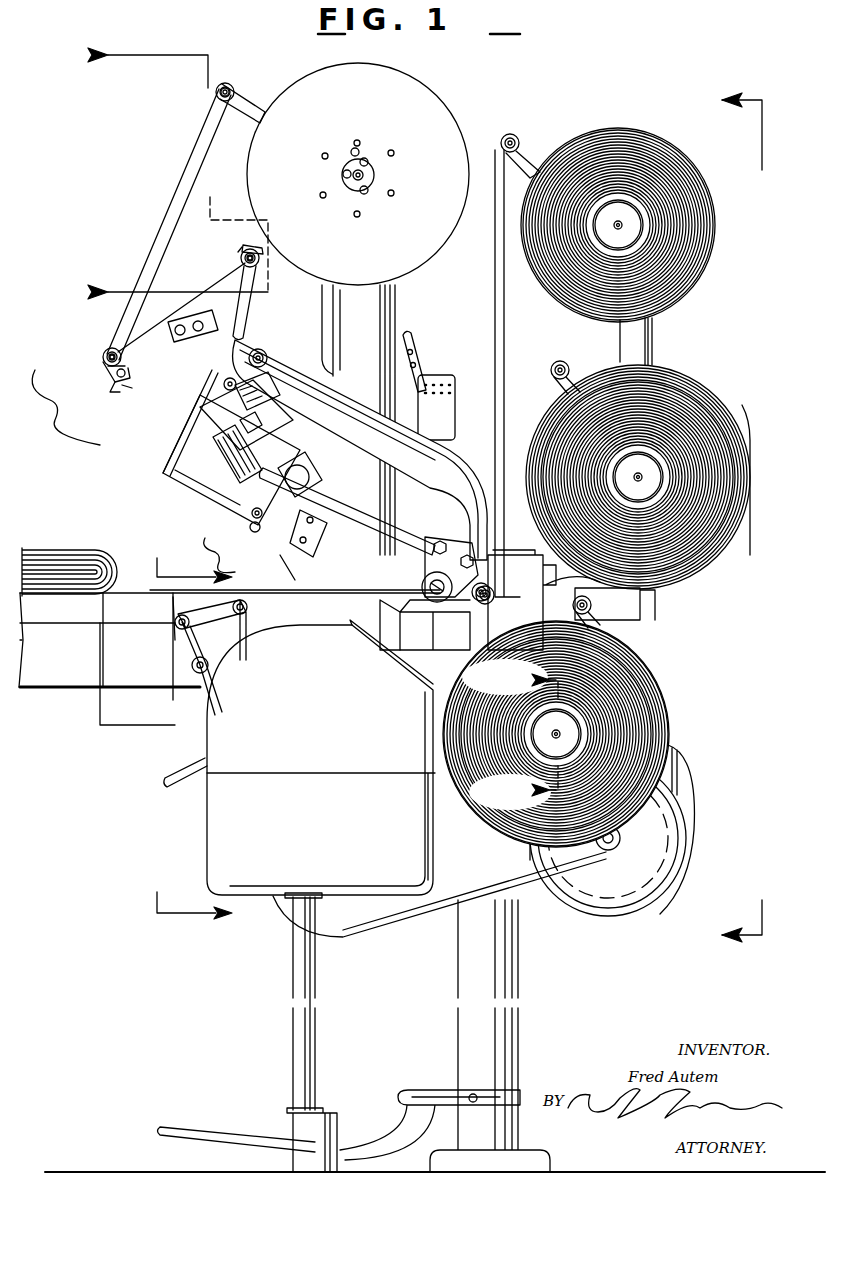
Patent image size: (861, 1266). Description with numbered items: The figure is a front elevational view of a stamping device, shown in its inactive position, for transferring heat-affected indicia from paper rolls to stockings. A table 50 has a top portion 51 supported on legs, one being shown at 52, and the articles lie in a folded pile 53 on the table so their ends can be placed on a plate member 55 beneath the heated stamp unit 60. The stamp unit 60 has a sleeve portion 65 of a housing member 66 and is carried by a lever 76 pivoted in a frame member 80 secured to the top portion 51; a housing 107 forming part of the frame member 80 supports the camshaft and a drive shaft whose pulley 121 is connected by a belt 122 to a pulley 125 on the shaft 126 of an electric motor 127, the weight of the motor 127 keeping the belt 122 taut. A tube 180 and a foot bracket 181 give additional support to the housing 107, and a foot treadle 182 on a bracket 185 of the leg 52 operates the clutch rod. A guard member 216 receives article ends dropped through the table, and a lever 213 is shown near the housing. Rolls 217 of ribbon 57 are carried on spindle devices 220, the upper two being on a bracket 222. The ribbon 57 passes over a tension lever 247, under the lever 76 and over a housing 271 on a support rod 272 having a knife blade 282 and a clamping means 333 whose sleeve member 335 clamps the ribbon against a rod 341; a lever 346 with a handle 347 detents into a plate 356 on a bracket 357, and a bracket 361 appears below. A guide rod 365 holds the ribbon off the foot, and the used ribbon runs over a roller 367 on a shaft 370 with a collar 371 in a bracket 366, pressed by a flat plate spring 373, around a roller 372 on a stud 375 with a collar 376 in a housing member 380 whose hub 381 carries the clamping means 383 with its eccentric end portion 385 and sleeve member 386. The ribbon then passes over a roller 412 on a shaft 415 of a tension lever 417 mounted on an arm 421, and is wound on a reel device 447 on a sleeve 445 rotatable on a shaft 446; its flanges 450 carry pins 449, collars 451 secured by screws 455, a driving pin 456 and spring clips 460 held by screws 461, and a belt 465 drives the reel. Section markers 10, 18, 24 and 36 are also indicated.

The section line 10 is at (208, 742).
The section line 18 is at (721, 521).
The section line 24 is at (516, 739).
The section line 36 is at (156, 176).
The table 50 is at (80, 690).
The top portion 51 is at (52, 677).
The leg 52 is at (519, 983).
The pile 53 is at (88, 558).
The plate member 55 is at (157, 590).
The paper strip or ribbon 57 is at (496, 305).
The heated stamp unit 60 is at (192, 486).
The sleeve portion 65 is at (242, 437).
The housing member 66 is at (235, 395).
The lever 76 is at (464, 448).
The frame member 80 is at (503, 560).
The housing 107 is at (207, 858).
The pulley 121 is at (362, 923).
The belt 122 is at (528, 893).
The pulley 125 is at (620, 847).
The shaft 126 is at (622, 840).
The electric motor 127 is at (678, 832).
The tube 180 is at (316, 1047).
The foot bracket 181 is at (335, 1120).
The foot treadle 182 is at (212, 1128).
The bracket 185 is at (440, 1090).
The lever 213 is at (167, 783).
The guard member 216 is at (113, 728).
The rolls 217 is at (712, 226).
The spindle devices 220 is at (624, 224).
The bracket 222 is at (656, 346).
The tension lever 247 is at (534, 166).
The housing 271 is at (314, 476).
The support rod 272 is at (357, 508).
The knife blade 282 is at (318, 538).
The clamping means 333 is at (208, 555).
The sleeve member 335 is at (260, 540).
The rod 341 is at (255, 531).
The lever 346 is at (468, 636).
The handle 347 is at (414, 355).
The plate 356 is at (448, 416).
The bracket 357 is at (248, 357).
The bracket 361 is at (420, 670).
The guide rod 365 is at (223, 382).
The bracket 366 is at (262, 318).
The roller 367 is at (263, 252).
The shaft 370 is at (261, 258).
The collar 371 is at (243, 258).
The roller 372 is at (116, 350).
The flat plate spring 373 is at (247, 248).
The stud 375 is at (117, 371).
The collar 376 is at (106, 357).
The housing member 380 is at (108, 366).
The sleeve or hub 381 is at (117, 381).
The clamping means 383 is at (62, 407).
The eccentric end portion 385 is at (126, 386).
The sleeve member 386 is at (118, 393).
The roller 412 is at (224, 102).
The rod or shaft 415 is at (238, 112).
The tension lever 417 is at (249, 116).
The arm 421 is at (384, 309).
The sleeve 445 is at (350, 170).
The shaft 446 is at (372, 162).
The reel device 447 is at (463, 128).
The pins 449 is at (393, 191).
The flanges 450 is at (441, 110).
The collar 451 is at (366, 193).
The screws 455 is at (343, 175).
The pin 456 is at (367, 160).
The spring clip 460 is at (351, 152).
The screw 461 is at (357, 140).
The belt 465 is at (321, 328).